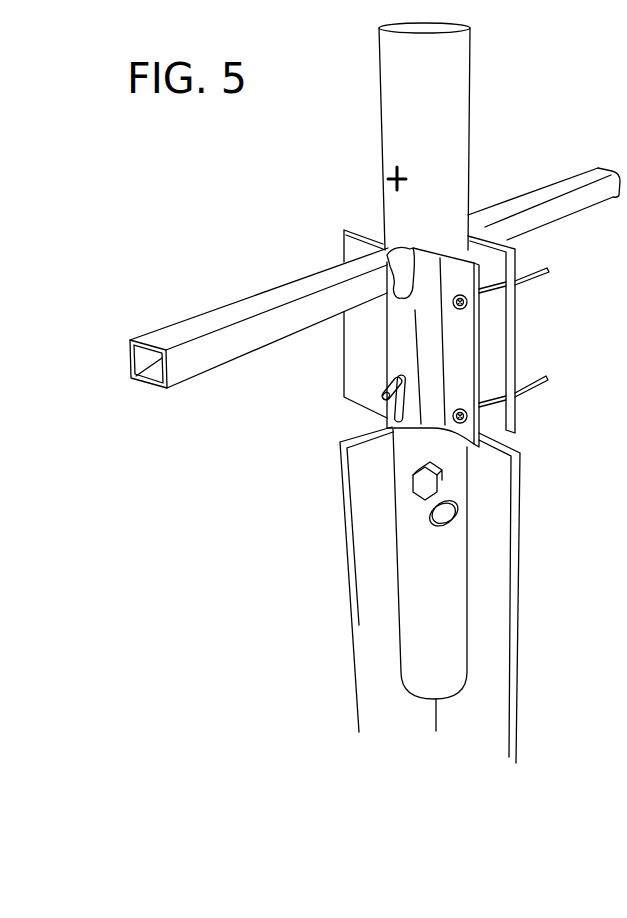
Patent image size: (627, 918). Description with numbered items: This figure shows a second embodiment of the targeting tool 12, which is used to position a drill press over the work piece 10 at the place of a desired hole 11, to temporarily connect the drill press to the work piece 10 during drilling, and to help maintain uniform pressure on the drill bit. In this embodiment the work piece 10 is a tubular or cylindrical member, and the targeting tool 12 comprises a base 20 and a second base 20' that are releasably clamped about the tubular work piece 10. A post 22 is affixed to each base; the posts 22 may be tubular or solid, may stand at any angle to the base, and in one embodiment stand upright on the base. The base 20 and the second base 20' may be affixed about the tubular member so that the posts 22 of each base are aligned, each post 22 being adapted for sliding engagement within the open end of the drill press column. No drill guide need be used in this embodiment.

The work piece 10 is at (397, 57).
The desired hole 11 is at (389, 174).
The targeting tool 12 is at (415, 320).
The base 20 is at (497, 347).
The second base 20' is at (534, 334).
The post 22 is at (222, 345).